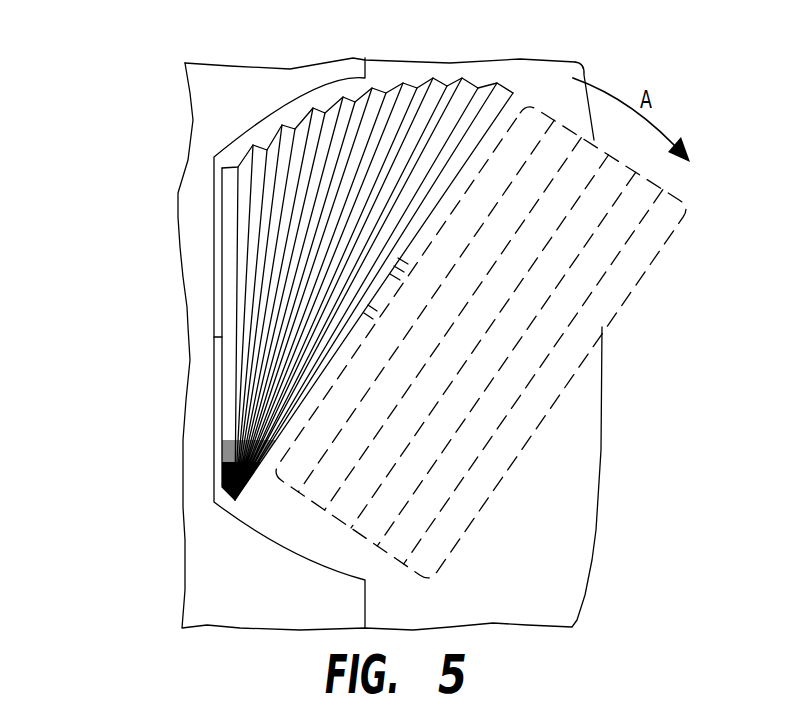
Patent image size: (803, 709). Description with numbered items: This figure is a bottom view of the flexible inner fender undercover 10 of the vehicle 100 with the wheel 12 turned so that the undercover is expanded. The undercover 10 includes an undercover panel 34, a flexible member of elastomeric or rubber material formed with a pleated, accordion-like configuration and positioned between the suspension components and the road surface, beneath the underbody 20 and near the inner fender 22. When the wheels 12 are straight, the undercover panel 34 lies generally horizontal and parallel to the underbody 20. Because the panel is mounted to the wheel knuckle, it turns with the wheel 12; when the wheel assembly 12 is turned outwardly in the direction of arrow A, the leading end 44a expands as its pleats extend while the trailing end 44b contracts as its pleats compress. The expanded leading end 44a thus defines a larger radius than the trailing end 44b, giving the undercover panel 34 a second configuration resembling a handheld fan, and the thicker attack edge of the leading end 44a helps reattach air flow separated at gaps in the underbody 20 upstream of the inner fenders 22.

The vehicle 100 is at (147, 115).
The inner fender undercover 10 is at (217, 254).
The wheel 12 is at (517, 430).
The underbody 20 is at (237, 87).
The inner fender 22 is at (383, 78).
The undercover panel 34 is at (255, 362).
The leading end 44a is at (440, 85).
The trailing end 44b is at (229, 491).